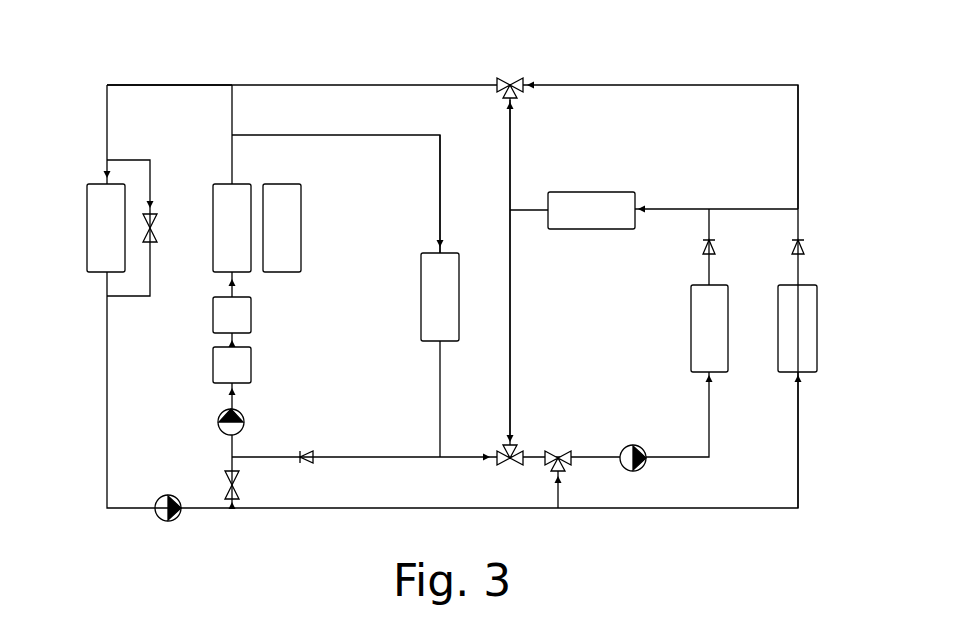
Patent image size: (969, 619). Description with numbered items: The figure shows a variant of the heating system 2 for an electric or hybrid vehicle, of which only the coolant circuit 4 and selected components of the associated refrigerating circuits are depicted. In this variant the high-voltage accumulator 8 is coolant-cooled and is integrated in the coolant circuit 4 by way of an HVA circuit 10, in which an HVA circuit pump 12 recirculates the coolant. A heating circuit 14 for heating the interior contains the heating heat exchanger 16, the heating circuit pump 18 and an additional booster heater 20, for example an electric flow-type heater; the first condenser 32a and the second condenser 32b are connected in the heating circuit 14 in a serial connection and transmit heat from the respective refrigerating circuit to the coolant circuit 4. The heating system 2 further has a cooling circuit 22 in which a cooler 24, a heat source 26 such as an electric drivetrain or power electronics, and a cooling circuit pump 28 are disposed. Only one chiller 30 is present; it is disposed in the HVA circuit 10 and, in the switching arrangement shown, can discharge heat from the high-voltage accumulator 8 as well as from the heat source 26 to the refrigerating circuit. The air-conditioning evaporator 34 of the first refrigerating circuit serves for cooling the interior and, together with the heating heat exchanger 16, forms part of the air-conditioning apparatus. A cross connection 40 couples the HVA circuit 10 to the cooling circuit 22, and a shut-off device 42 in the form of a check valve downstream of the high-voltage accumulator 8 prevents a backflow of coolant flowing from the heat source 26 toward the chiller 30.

The heating system 2 is at (130, 49).
The coolant circuit 4 is at (168, 77).
The high-voltage accumulator 8 is at (709, 328).
The HVA circuit 10 is at (511, 253).
The HVA circuit pump 12 is at (634, 445).
The heating circuit 14 is at (439, 205).
The heating heat exchanger 16 is at (232, 228).
The heating circuit pump 18 is at (218, 420).
The booster heater 20 is at (440, 297).
The cooling circuit 22 is at (473, 85).
The cooler 24 is at (106, 228).
The heat source 26 is at (797, 396).
The cooling circuit pump 28 is at (159, 497).
The chiller 30 is at (591, 211).
The first condenser 32a is at (252, 330).
The second condenser 32b is at (252, 375).
The air-conditioning evaporator 34 is at (282, 228).
The cross connection 40 is at (795, 207).
The shut-off device 42 is at (703, 243).